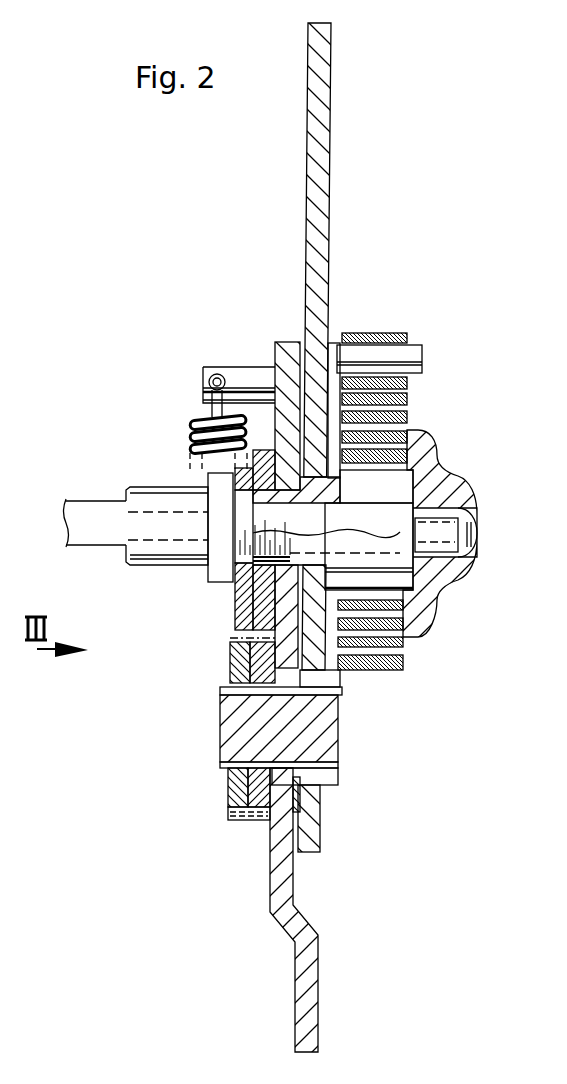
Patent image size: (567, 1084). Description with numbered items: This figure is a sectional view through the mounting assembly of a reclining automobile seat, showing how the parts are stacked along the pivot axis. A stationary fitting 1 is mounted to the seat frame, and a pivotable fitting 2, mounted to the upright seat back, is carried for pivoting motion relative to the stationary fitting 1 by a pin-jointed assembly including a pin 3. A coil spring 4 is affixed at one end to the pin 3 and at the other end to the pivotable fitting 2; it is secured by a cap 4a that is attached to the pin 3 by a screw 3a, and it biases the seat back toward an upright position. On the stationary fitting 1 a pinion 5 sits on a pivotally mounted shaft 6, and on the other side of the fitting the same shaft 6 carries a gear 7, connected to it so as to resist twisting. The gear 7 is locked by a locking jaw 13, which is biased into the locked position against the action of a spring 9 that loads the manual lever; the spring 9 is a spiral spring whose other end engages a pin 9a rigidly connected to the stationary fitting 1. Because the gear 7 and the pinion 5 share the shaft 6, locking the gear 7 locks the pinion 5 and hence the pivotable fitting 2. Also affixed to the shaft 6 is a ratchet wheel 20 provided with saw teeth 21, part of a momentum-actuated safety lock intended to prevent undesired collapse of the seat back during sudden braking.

The stationary fitting 1 is at (298, 983).
The pivotable fitting 2 is at (321, 143).
The pin 3 is at (158, 535).
The screw 3a is at (479, 522).
The coil spring 4 is at (392, 420).
The cap 4a is at (455, 482).
The pinion 5 is at (328, 772).
The shaft 6 is at (320, 737).
The gear 7 is at (260, 812).
The spring 9 is at (188, 440).
The pin 9a is at (238, 373).
The locking jaw 13 is at (240, 610).
The ratchet wheel 20 is at (232, 812).
The saw teeth 21 is at (228, 633).